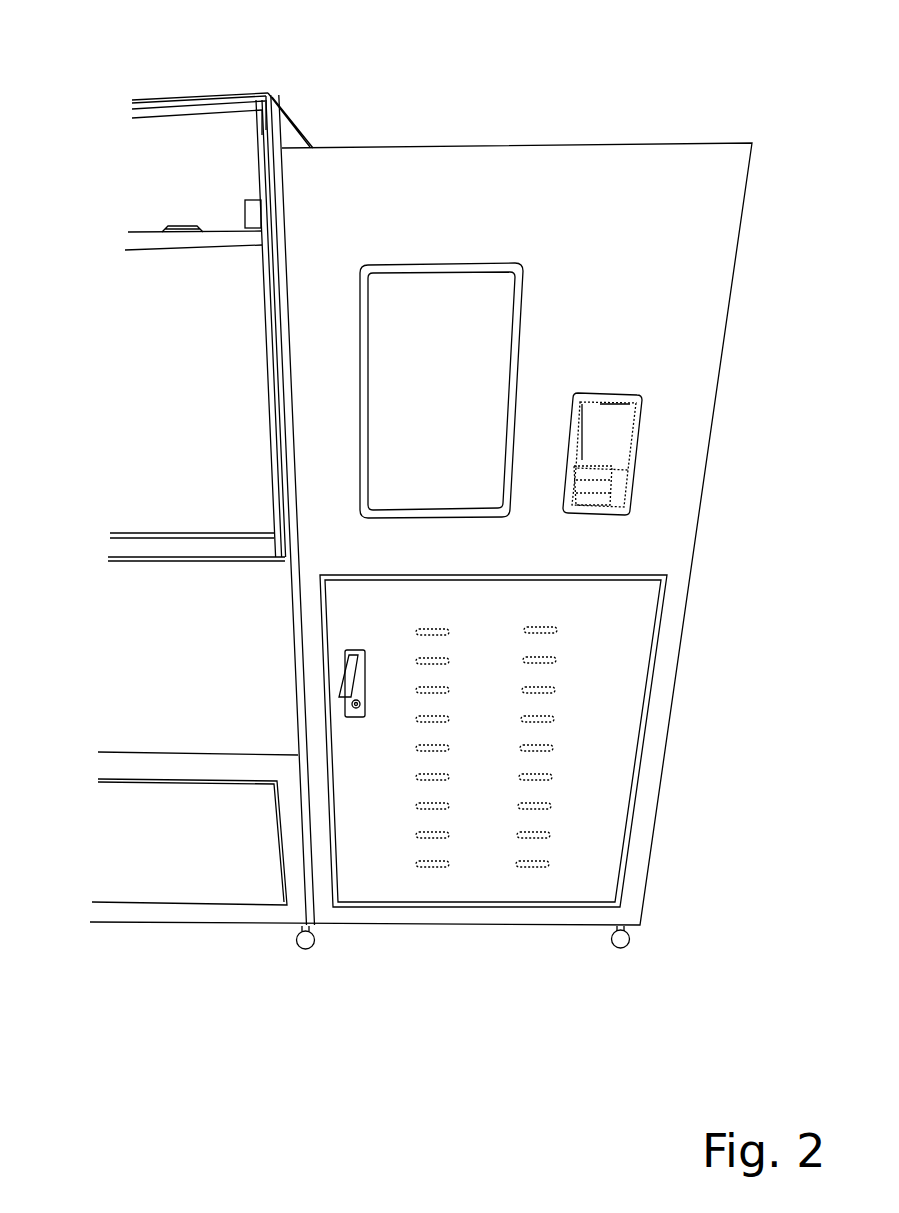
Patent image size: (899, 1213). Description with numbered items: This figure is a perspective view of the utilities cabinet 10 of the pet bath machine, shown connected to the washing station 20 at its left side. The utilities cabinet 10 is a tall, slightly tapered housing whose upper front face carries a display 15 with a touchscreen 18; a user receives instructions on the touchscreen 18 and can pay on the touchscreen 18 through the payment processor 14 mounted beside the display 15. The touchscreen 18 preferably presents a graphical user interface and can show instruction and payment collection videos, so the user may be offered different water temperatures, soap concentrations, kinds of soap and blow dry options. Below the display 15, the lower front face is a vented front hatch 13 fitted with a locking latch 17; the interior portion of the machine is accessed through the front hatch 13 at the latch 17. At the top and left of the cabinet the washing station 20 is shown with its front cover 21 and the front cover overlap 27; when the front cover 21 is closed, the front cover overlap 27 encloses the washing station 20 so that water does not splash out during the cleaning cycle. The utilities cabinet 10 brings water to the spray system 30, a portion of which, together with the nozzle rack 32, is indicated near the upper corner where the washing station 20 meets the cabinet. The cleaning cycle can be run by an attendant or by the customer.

The utilities cabinet 10 is at (690, 163).
The front hatch 13 is at (630, 732).
The payment processor 14 is at (592, 415).
The display 15 is at (435, 282).
The latch 17 is at (355, 650).
The touch screen 18 is at (385, 388).
The washing station 20 is at (145, 108).
The front cover 21 is at (223, 140).
The front cover overlap 27 is at (117, 545).
The spray system 30 is at (170, 222).
The nozzle rack 32 is at (258, 208).